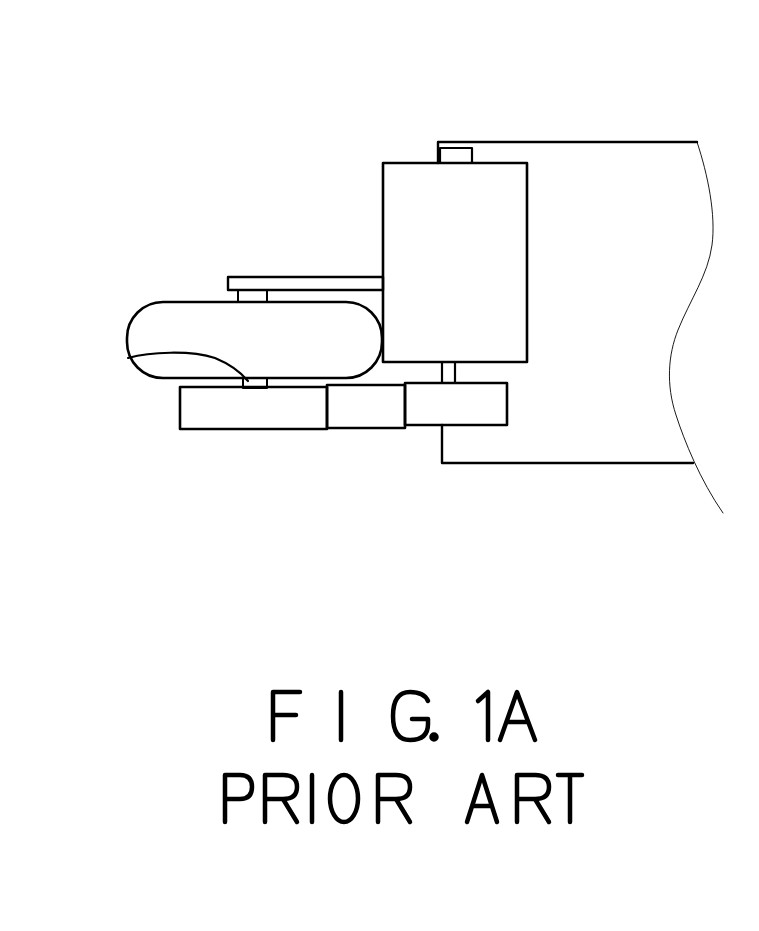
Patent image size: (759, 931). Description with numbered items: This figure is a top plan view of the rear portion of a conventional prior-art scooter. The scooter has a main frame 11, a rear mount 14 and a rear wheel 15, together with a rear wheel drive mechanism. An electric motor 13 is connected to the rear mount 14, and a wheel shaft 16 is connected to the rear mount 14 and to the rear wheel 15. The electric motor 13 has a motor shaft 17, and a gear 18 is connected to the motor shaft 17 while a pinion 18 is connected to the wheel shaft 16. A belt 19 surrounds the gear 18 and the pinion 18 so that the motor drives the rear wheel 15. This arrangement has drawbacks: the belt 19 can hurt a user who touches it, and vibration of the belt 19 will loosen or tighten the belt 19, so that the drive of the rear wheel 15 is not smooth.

The main frame 11 is at (605, 175).
The electric motor 13 is at (395, 200).
The rear mount 14 is at (317, 283).
The rear wheel 15 is at (165, 320).
The wheel shaft 16 is at (128, 358).
The motor shaft 17 is at (463, 378).
The gear and pinion 18 is at (250, 413).
The belt 19 is at (365, 413).